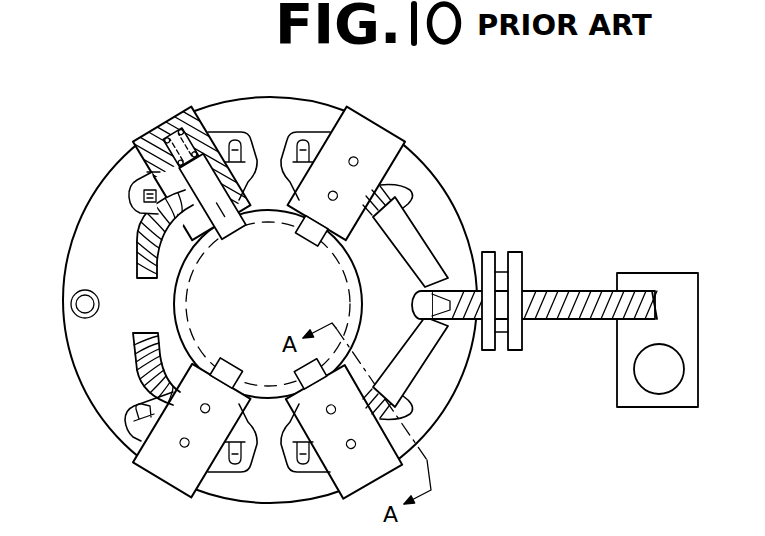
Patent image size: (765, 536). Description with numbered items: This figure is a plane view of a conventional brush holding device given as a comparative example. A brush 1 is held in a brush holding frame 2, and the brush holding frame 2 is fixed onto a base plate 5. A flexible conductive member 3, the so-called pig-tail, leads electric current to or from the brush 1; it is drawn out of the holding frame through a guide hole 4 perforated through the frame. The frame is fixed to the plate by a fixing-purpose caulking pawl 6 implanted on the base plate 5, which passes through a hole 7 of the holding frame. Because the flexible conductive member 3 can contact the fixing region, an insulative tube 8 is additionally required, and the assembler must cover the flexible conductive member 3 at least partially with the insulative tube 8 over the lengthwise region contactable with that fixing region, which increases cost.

The brush 1 is at (268, 304).
The brush holding frame 2 is at (193, 128).
The flexible conductive member 3 is at (383, 182).
The guide hole 4 is at (158, 170).
The base plate 5 is at (103, 275).
The fixing-purpose caulking pawl 6 is at (137, 207).
The hole of holding frame 7 is at (137, 182).
The insulative tube 8 is at (412, 255).